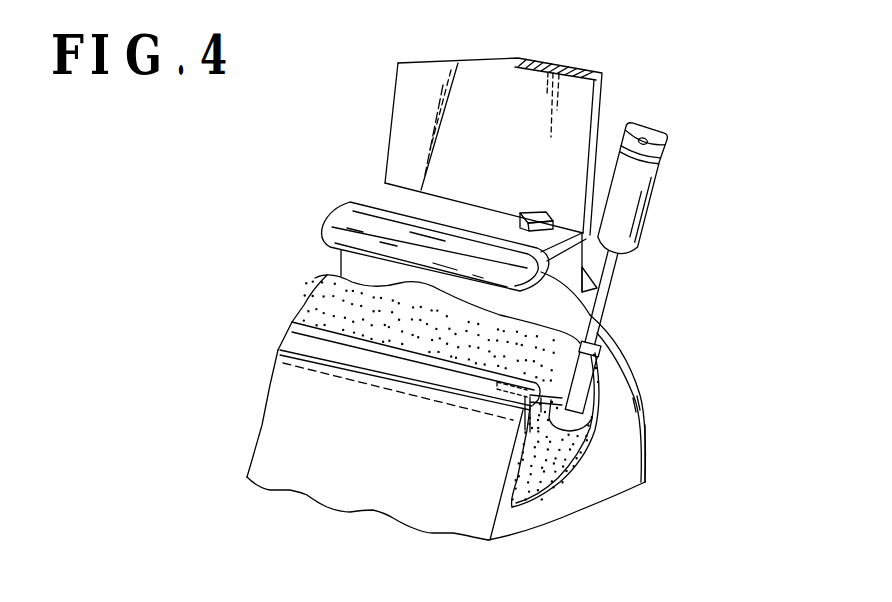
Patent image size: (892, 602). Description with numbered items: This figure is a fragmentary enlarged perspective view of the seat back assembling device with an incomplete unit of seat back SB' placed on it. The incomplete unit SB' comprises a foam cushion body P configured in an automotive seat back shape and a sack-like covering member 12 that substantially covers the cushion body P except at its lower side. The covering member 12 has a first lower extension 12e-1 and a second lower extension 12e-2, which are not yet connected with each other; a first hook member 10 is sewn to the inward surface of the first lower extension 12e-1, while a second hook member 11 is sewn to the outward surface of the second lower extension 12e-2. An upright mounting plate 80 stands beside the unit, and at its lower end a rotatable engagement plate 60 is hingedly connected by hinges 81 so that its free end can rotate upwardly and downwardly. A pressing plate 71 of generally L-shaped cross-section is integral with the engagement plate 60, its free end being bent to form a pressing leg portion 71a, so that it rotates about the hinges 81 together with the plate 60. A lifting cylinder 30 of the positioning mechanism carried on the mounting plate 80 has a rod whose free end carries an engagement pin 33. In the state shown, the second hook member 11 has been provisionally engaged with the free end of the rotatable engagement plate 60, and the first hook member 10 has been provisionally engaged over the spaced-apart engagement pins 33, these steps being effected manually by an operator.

The mounting plate 80 is at (410, 102).
The rotatable engagement plate 60 is at (398, 205).
The hinges 81 is at (533, 210).
The second hook member 11 is at (349, 214).
The second lower extension 12e-2 is at (350, 268).
The foam cushion body P is at (327, 297).
The first hook member 10 is at (305, 342).
The first lower extension 12e-1 is at (313, 398).
The covering member 12 is at (327, 485).
The lifting cylinder 30 is at (647, 195).
The pressing plate 71 is at (598, 269).
The pressing leg portion 71a is at (593, 300).
The engagement pin 33 is at (550, 437).
The incomplete unit of seat back SB' is at (670, 400).